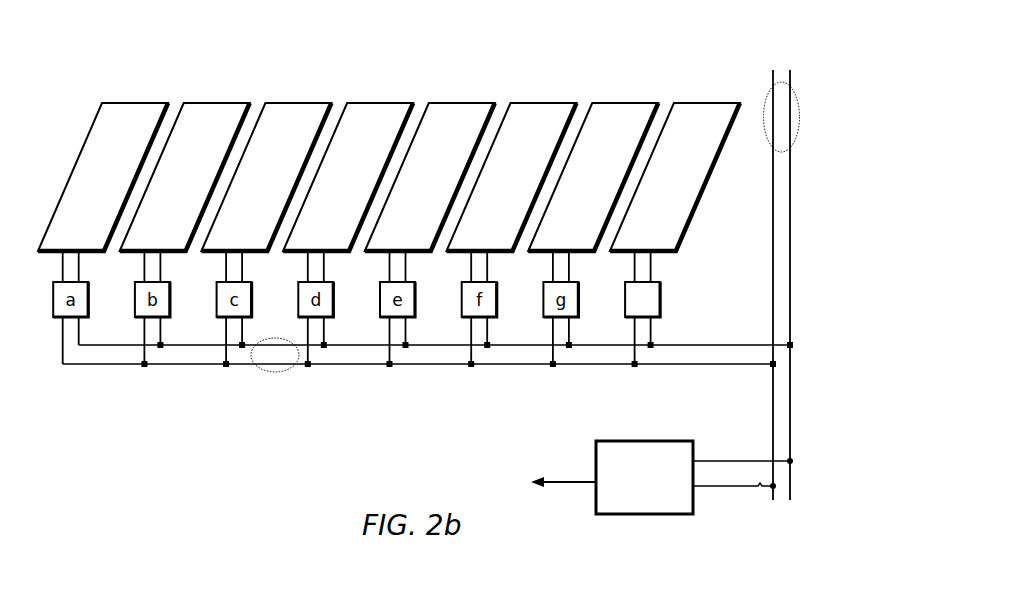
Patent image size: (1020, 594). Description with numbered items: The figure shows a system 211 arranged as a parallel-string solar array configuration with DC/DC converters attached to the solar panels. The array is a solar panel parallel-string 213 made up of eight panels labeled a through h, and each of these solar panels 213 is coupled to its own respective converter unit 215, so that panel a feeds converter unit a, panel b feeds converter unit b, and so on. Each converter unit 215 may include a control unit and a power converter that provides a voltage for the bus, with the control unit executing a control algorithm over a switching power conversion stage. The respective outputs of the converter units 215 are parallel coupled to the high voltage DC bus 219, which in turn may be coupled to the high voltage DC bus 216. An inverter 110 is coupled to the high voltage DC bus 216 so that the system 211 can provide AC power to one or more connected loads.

The system 211 is at (99, 58).
The solar panel parallel-string 213 is at (74, 131).
The converter unit 215 is at (676, 289).
The high voltage DC bus 216 is at (766, 108).
The high voltage DC bus 219 is at (258, 368).
The inverter 110 is at (662, 458).